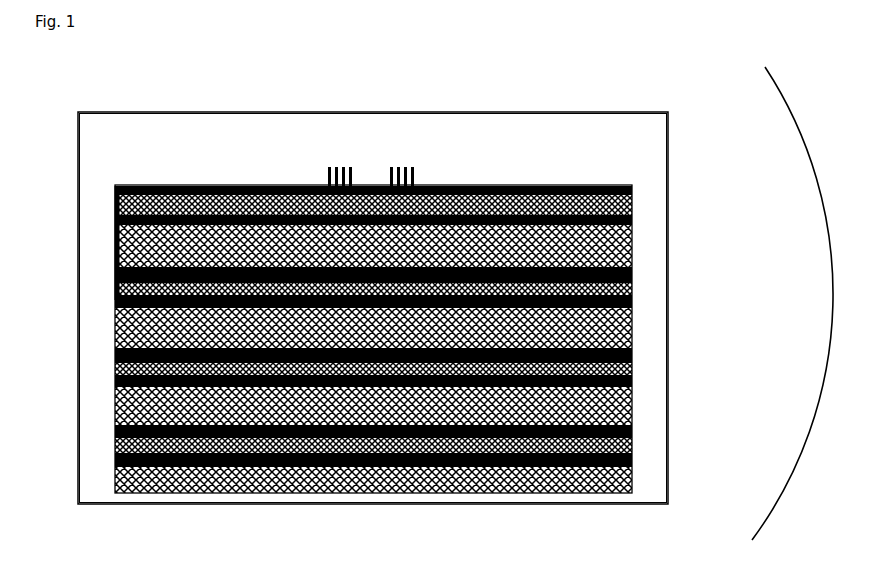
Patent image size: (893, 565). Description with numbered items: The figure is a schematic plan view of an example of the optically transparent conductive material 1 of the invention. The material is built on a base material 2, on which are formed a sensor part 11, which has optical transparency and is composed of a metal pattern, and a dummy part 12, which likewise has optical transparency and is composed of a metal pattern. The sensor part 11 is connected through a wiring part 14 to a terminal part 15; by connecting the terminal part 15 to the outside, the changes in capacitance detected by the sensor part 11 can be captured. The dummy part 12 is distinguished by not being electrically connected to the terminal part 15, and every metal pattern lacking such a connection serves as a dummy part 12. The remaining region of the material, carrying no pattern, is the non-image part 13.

The optically transparent conductive material 1 is at (813, 303).
The base material 2 is at (668, 112).
The sensor part 11 is at (594, 218).
The dummy part 12 is at (600, 310).
The non-image part 13 is at (613, 157).
The wiring part 14 is at (117, 184).
The terminal part 15 is at (348, 166).